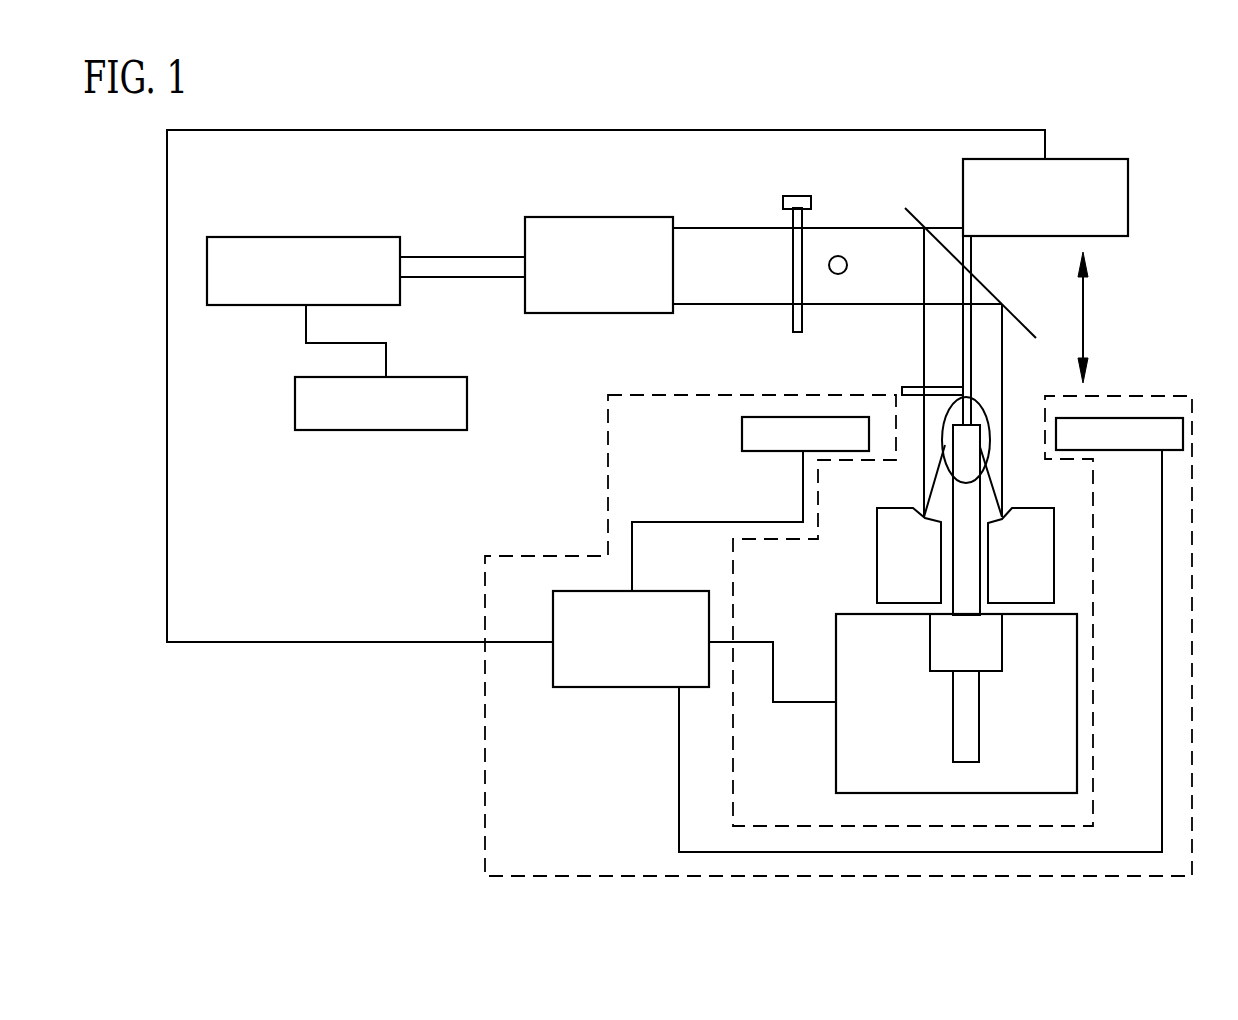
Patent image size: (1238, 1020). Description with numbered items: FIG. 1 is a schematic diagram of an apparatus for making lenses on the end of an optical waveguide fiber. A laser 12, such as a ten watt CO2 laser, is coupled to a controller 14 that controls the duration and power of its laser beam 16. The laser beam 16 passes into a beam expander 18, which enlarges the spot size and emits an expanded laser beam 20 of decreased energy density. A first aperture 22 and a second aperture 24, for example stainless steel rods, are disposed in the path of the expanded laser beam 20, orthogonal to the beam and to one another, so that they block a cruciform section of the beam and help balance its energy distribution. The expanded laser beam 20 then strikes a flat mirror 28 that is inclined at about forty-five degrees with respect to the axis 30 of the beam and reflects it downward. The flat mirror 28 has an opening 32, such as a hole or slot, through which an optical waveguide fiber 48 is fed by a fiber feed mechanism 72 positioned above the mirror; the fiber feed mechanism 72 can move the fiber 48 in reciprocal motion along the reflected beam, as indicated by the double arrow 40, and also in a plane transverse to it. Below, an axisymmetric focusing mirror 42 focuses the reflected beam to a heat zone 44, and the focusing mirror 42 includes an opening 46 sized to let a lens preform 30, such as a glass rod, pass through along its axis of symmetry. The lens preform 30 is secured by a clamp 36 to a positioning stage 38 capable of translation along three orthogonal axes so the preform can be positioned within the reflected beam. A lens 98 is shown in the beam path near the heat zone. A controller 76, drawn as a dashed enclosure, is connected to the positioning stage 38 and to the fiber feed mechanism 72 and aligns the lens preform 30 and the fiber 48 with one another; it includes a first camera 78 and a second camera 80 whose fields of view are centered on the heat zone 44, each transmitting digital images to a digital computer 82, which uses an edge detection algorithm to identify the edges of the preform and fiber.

The laser 12 is at (285, 237).
The controller 14 is at (445, 377).
The laser beam 16 is at (465, 257).
The beam expander 18 is at (598, 217).
The expanded laser beam 20 is at (713, 228).
The first aperture 22 is at (803, 248).
The second aperture 24 is at (842, 275).
The flat mirror 28 is at (1002, 306).
The lens preform 30 is at (717, 304).
The opening 32 is at (960, 262).
The clamp 36 is at (930, 651).
The positioning stage 38 is at (836, 742).
The direction of fiber feed 40 is at (1085, 320).
The focusing mirror 42 is at (918, 514).
The heat zone 44 is at (999, 400).
The opening 46 is at (990, 525).
The optical waveguide fiber 48 is at (963, 285).
The fiber feed mechanism 72 is at (1099, 159).
The controller 76 is at (485, 711).
The first camera 78 is at (742, 433).
The second camera 80 is at (1125, 451).
The digital computer 82 is at (606, 687).
The lens 98 is at (901, 388).